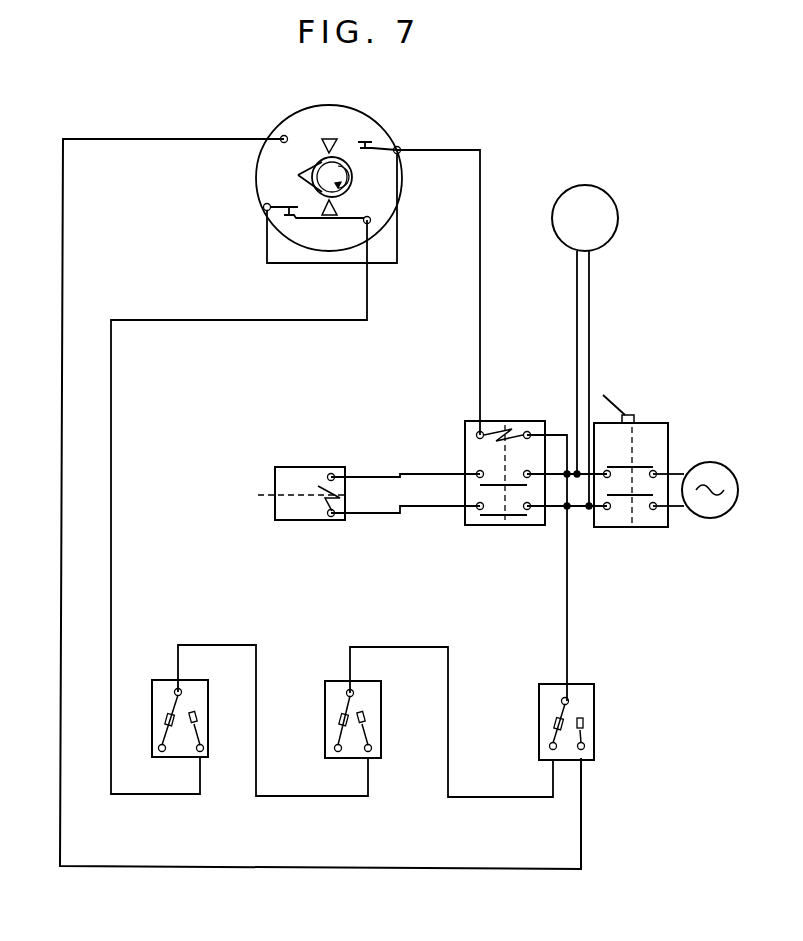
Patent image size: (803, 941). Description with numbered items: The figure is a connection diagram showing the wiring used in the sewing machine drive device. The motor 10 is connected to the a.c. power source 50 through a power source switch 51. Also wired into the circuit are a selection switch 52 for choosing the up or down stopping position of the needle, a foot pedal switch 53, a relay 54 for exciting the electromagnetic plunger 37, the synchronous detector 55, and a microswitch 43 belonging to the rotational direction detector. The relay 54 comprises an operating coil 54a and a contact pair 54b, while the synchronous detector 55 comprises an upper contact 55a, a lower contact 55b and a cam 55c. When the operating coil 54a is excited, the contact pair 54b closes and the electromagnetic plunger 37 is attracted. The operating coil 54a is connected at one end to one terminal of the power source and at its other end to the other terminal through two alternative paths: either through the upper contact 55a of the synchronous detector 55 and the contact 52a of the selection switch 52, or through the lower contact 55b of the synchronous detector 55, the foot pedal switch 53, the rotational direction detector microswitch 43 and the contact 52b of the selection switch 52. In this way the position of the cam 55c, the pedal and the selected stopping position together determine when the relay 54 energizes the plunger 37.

The motor 10 is at (605, 192).
The electromagnetic plunger 37 is at (318, 466).
The microswitch 43 is at (380, 724).
The a.c. power source 50 is at (693, 513).
The power source switch 51 is at (647, 423).
The selection switch 52 is at (571, 721).
The contact of selection switch 52a is at (583, 738).
The contact of selection switch 52b is at (548, 735).
The foot pedal switch 53 is at (208, 724).
The relay 54 is at (515, 470).
The operating coil 54a is at (503, 430).
The contact pair 54b is at (492, 525).
The synchronous detector 55 is at (316, 167).
The upper contact 55a is at (357, 139).
The lower contact 55b is at (290, 216).
The cam 55c is at (300, 176).